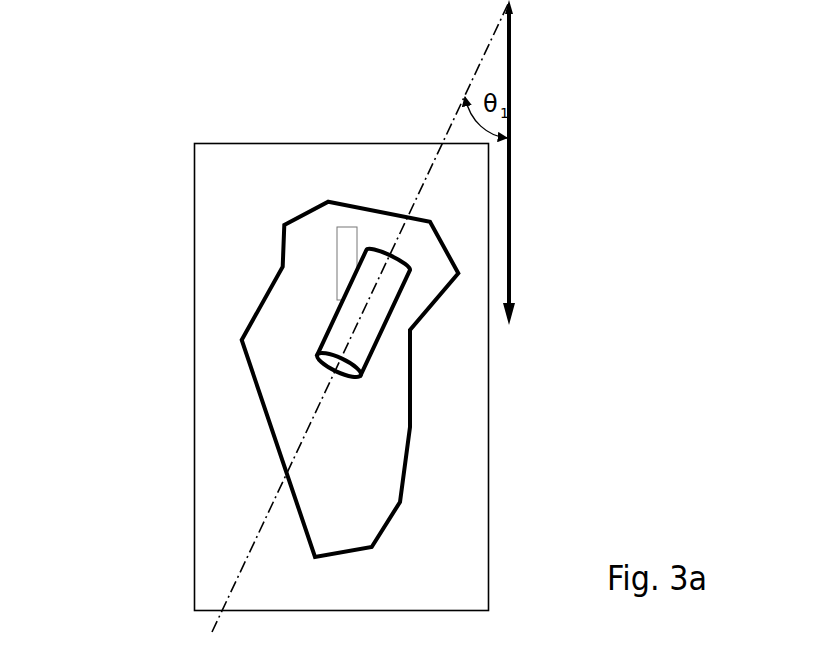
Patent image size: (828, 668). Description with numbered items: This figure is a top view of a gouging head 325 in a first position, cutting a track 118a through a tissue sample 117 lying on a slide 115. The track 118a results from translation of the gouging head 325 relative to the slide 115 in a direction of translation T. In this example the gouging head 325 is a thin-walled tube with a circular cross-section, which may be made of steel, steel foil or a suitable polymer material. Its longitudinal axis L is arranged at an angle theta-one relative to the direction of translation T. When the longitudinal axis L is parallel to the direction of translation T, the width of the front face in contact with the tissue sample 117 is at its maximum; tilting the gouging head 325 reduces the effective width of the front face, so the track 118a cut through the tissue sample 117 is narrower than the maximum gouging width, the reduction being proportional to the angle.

The slide 115 is at (243, 195).
The tissue sample 117 is at (360, 492).
The track 118a is at (343, 258).
The gouging head 325 is at (350, 338).
The longitudinal axis L is at (242, 567).
The direction of translation T is at (513, 255).